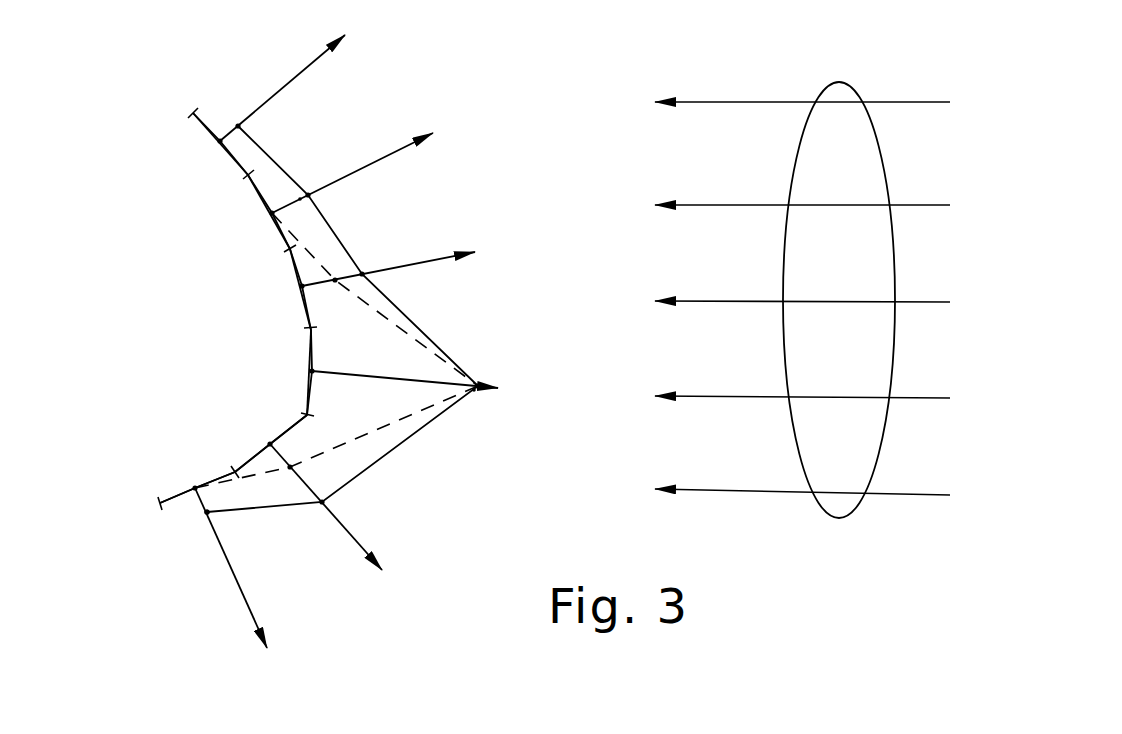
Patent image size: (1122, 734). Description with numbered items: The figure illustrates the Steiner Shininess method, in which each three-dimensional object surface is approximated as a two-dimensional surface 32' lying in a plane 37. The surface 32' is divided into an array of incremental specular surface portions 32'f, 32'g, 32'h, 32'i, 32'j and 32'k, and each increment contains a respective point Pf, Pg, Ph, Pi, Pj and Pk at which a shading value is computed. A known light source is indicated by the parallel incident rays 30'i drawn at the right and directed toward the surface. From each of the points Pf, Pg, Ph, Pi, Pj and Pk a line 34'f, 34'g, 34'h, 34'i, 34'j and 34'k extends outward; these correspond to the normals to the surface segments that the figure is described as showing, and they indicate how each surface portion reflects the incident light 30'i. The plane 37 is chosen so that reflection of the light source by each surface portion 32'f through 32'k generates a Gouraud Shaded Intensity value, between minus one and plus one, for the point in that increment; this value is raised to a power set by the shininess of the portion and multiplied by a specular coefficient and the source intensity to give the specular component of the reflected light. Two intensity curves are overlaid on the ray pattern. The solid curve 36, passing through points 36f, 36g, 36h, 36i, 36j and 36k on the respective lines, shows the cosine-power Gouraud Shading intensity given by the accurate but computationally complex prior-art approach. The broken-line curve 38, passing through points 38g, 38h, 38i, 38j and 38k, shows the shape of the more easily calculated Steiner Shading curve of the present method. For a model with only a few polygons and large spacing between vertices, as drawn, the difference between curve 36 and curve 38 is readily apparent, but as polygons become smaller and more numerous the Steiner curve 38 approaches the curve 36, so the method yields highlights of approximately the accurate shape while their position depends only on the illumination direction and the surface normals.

The plane 37 is at (149, 341).
The two-dimensional surface 32' is at (140, 473).
The incremental specular surface portion 32'f is at (175, 144).
The incremental specular surface portion 32'g is at (222, 212).
The incremental specular surface portion 32'h is at (254, 289).
The incremental specular surface portion 32'i is at (261, 364).
The incremental specular surface portion 32'j is at (261, 421).
The incremental specular surface portion 32'k is at (191, 453).
The reflected ray f 34'f is at (310, 88).
The reflected ray g 34'g is at (377, 173).
The reflected ray h 34'h is at (418, 279).
The reflected ray i 34'i is at (405, 395).
The reflected ray j 34'j is at (326, 521).
The reflected ray k 34'k is at (205, 568).
The solid curve 36 is at (420, 432).
The boundary point f 36f is at (242, 127).
The boundary point g 36g is at (313, 196).
The boundary point h 36h is at (367, 268).
The boundary point i 36i is at (480, 382).
The boundary point j 36j is at (326, 504).
The boundary point k 36k is at (206, 516).
The broken-line curve 38 is at (423, 333).
The inner boundary point g 38g is at (300, 192).
The inner boundary point h 38h is at (340, 278).
The inner boundary point i 38i is at (476, 394).
The inner boundary point j 38j is at (294, 470).
The inner boundary point k 38k is at (210, 512).
The incident rays 30'i is at (802, 268).
The point in surface increment Pf is at (220, 138).
The point in surface increment Pg is at (274, 210).
The point in surface increment Ph is at (305, 288).
The point in surface increment Pi is at (315, 370).
The point in surface increment Pj is at (272, 443).
The point in surface increment Pk is at (193, 492).